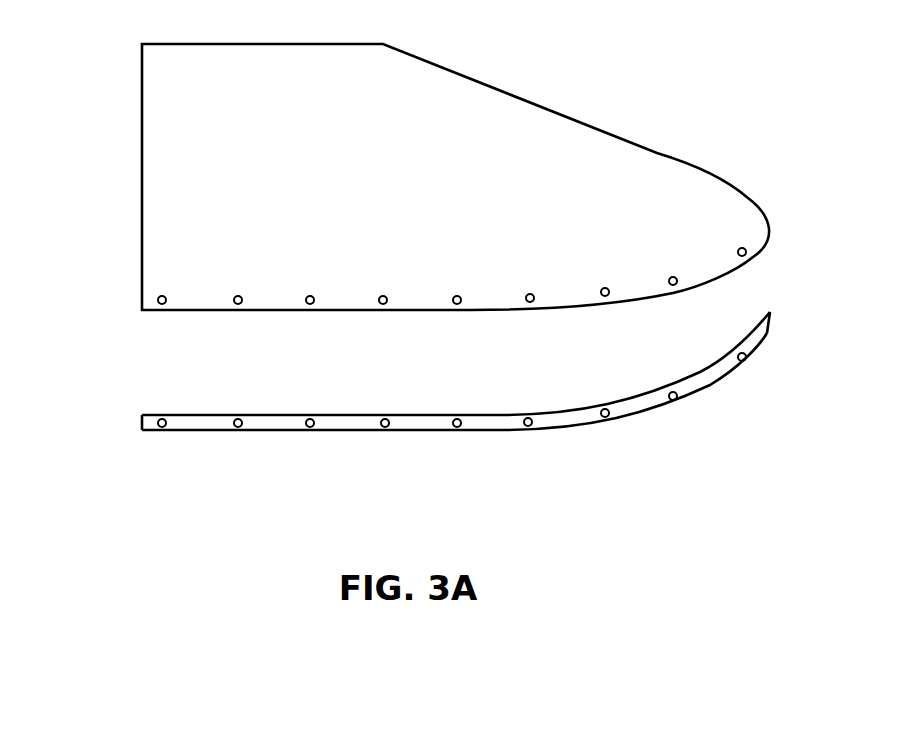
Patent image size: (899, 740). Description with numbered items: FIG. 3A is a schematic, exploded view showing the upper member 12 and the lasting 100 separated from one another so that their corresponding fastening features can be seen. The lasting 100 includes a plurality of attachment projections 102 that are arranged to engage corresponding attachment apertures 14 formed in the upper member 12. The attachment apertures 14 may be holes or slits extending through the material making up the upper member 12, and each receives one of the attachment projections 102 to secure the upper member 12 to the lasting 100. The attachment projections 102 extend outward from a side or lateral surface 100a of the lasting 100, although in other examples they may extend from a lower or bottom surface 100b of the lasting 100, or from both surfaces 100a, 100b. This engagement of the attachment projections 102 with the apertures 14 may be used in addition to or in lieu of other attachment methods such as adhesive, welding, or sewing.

The upper member 12 is at (719, 171).
The attachment apertures 14 is at (164, 297).
The lasting 100 is at (510, 395).
The lateral surface of lasting 100a is at (487, 423).
The bottom surface of lasting 100b is at (340, 430).
The attachment projections 102 is at (165, 426).